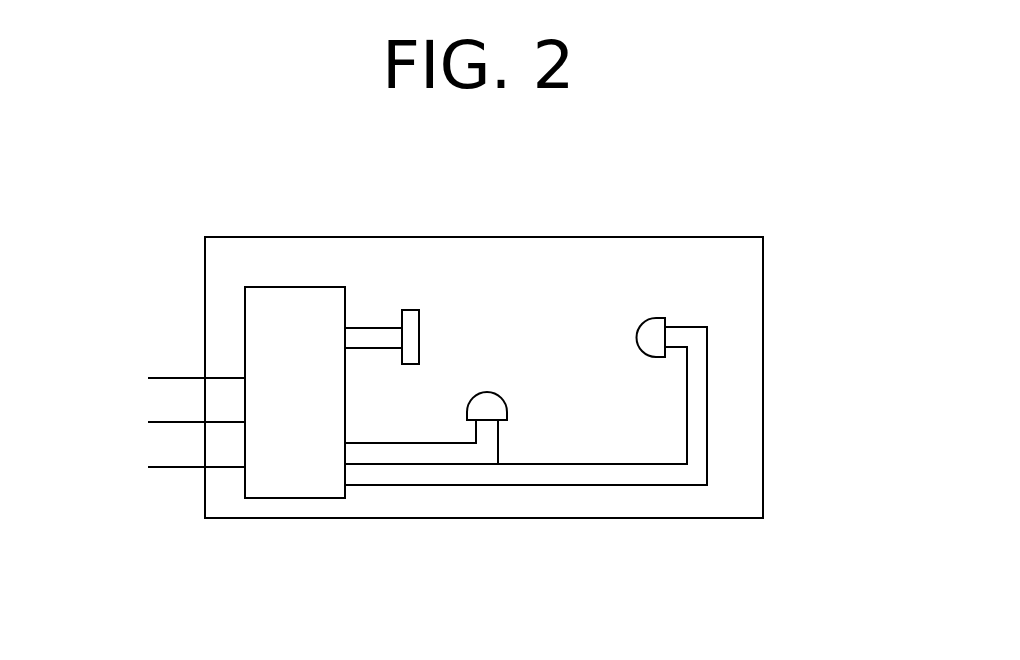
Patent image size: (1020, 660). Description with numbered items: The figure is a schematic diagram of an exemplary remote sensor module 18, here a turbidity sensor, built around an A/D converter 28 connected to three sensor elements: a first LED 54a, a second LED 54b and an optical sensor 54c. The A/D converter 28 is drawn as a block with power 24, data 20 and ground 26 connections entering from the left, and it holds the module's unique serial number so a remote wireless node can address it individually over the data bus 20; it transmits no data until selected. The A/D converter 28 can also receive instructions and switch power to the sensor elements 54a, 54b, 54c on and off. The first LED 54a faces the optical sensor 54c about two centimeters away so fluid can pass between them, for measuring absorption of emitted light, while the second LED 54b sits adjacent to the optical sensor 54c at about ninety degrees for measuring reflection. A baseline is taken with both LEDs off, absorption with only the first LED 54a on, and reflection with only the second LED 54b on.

The remote sensor module 18 is at (648, 237).
The data bus 20 is at (178, 422).
The power line 24 is at (173, 377).
The ground line 26 is at (170, 468).
The A/D converter 28 is at (295, 488).
The first LED 54a is at (657, 320).
The second LED 54b is at (487, 400).
The optical sensor 54c is at (410, 318).